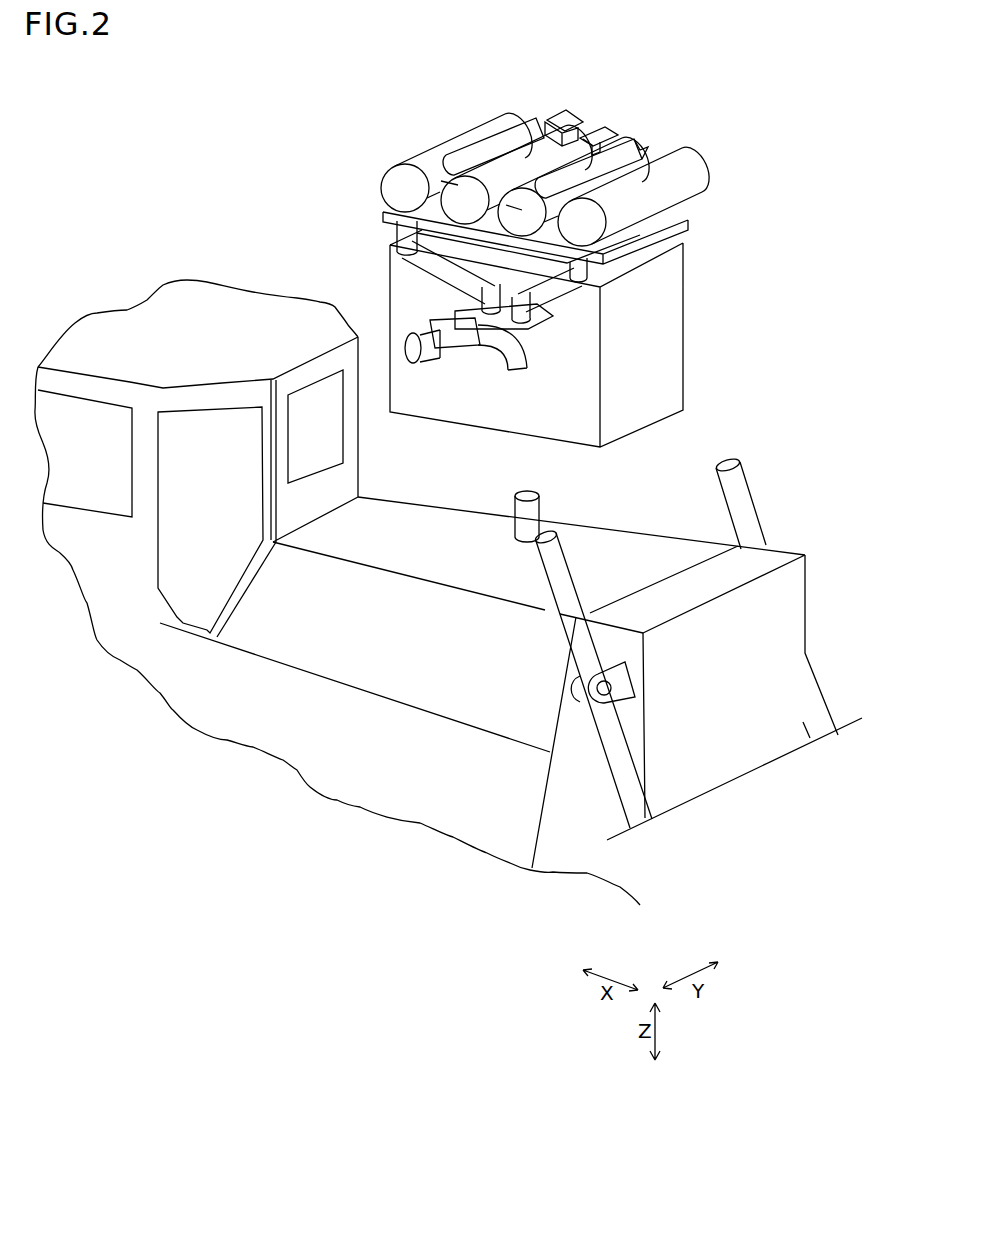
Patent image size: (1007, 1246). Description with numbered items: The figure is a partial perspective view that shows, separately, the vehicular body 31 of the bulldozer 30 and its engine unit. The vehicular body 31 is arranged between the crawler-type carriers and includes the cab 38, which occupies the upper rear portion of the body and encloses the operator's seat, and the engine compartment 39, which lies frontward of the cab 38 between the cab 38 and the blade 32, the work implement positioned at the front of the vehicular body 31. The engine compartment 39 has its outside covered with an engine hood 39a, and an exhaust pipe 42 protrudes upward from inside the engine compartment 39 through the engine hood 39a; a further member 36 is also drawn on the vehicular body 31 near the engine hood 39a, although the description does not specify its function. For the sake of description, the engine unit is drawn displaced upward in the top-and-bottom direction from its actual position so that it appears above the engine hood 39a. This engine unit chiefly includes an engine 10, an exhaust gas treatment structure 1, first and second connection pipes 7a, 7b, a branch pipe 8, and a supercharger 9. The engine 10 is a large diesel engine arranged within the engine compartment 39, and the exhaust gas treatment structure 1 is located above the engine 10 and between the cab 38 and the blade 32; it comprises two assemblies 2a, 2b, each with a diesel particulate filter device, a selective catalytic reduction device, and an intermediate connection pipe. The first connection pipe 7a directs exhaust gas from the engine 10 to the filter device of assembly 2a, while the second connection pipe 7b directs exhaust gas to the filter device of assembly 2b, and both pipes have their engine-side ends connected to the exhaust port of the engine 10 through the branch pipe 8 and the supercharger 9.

The exhaust gas treatment structure 1 is at (702, 142).
The first exhaust gas treatment unit 2a is at (523, 68).
The second exhaust gas treatment unit 2b is at (700, 68).
The first connection pipe 7a is at (413, 255).
The second connection pipe 7b is at (562, 278).
The branch pipe 8 is at (468, 357).
The supercharger 9 is at (428, 370).
The engine 10 is at (655, 347).
The bulldozer 30 is at (106, 272).
The vehicular body 31 is at (510, 670).
The blade 32 is at (839, 734).
The strut 36 is at (743, 492).
The cab 38 is at (227, 313).
The engine compartment 39 is at (343, 625).
The engine hood 39a is at (613, 550).
The exhaust pipe 42 is at (542, 505).